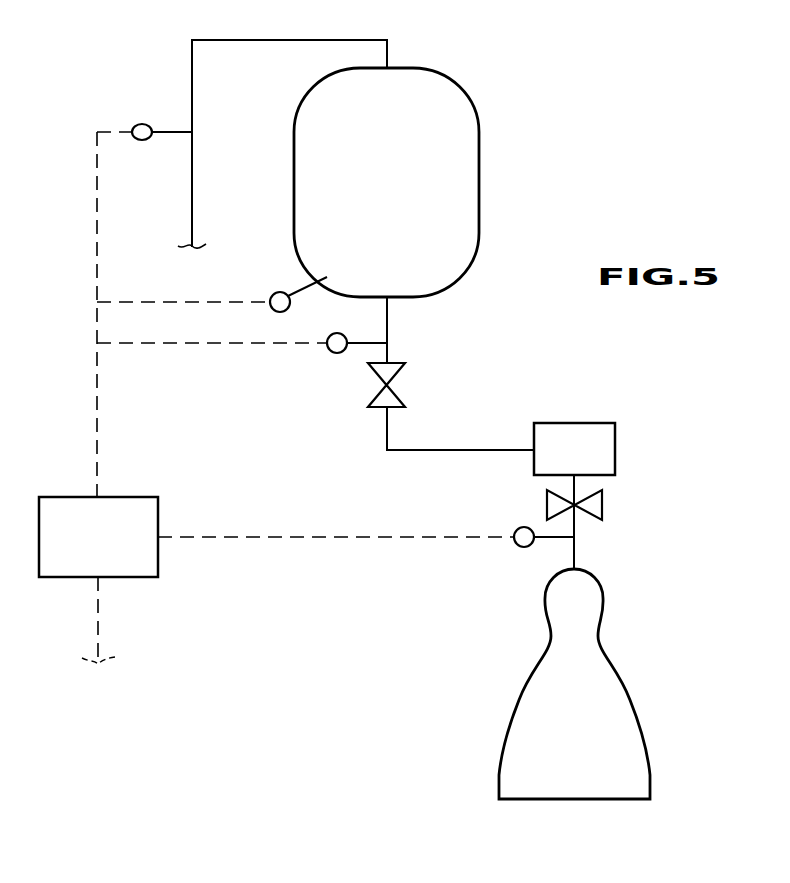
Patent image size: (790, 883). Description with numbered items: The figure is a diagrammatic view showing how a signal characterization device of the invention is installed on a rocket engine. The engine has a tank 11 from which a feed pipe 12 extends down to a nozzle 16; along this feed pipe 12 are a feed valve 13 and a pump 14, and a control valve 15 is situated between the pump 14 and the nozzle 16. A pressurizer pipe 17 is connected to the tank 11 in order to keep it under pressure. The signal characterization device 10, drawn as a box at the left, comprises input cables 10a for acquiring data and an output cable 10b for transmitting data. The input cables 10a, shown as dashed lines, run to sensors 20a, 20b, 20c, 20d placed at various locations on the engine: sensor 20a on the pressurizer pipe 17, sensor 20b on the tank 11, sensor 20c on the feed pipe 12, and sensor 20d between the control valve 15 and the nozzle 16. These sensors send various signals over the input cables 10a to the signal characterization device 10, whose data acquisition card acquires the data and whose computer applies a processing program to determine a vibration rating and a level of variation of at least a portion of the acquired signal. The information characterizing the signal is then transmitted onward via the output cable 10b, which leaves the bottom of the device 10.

The signal characterization device 10 is at (112, 551).
The input cables 10a is at (98, 473).
The output cable 10b is at (100, 620).
The tank 11 is at (406, 182).
The feed pipe 12 is at (388, 317).
The feed valve 13 is at (398, 388).
The pump 14 is at (589, 459).
The control valve 15 is at (600, 505).
The nozzle 16 is at (589, 739).
The pressurizer pipe 17 is at (265, 40).
The sensor 20a is at (142, 124).
The sensor 20b is at (273, 294).
The sensor 20c is at (333, 352).
The sensor 20d is at (521, 528).